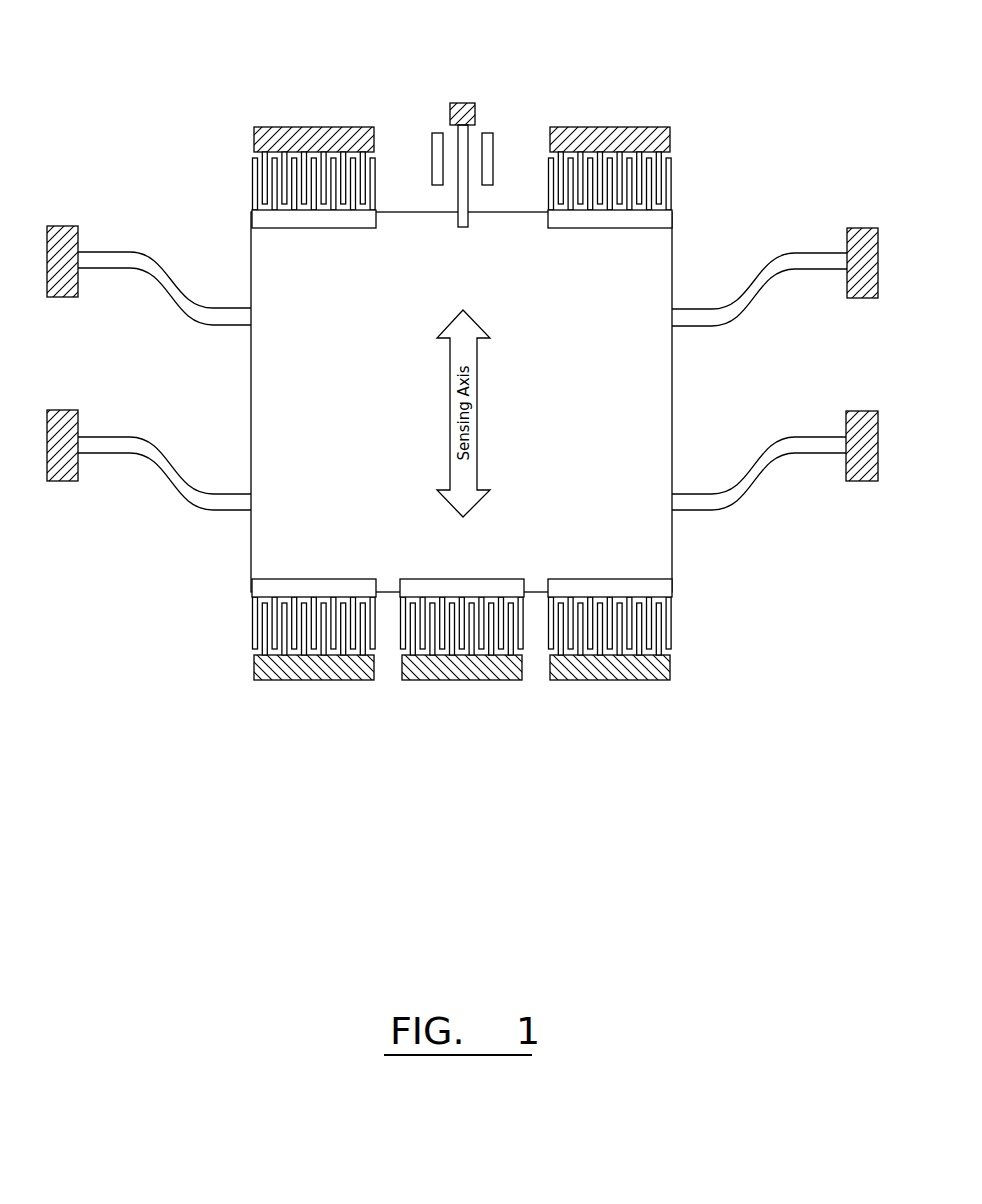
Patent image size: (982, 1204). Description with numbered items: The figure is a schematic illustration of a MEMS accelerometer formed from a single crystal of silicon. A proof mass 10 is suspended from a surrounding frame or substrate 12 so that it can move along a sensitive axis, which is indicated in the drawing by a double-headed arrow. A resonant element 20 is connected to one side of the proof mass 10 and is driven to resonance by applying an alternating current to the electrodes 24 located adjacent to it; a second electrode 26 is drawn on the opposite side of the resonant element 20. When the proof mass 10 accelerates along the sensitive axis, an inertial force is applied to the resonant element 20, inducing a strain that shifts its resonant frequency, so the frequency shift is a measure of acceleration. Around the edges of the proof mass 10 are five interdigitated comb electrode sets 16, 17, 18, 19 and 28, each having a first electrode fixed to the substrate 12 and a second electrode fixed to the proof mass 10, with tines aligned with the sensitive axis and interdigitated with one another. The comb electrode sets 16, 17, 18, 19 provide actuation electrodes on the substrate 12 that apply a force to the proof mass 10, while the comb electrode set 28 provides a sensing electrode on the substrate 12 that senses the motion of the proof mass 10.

The proof mass 10 is at (652, 535).
The substrate 12 is at (282, 140).
The comb electrode set 16 is at (253, 182).
The comb electrode set 17 is at (668, 185).
The comb electrode set 18 is at (255, 628).
The comb electrode set 19 is at (660, 625).
The resonant element 20 is at (455, 208).
The electrodes 24 is at (437, 142).
The side electrode 26 is at (493, 146).
The comb electrode set 28 is at (479, 678).